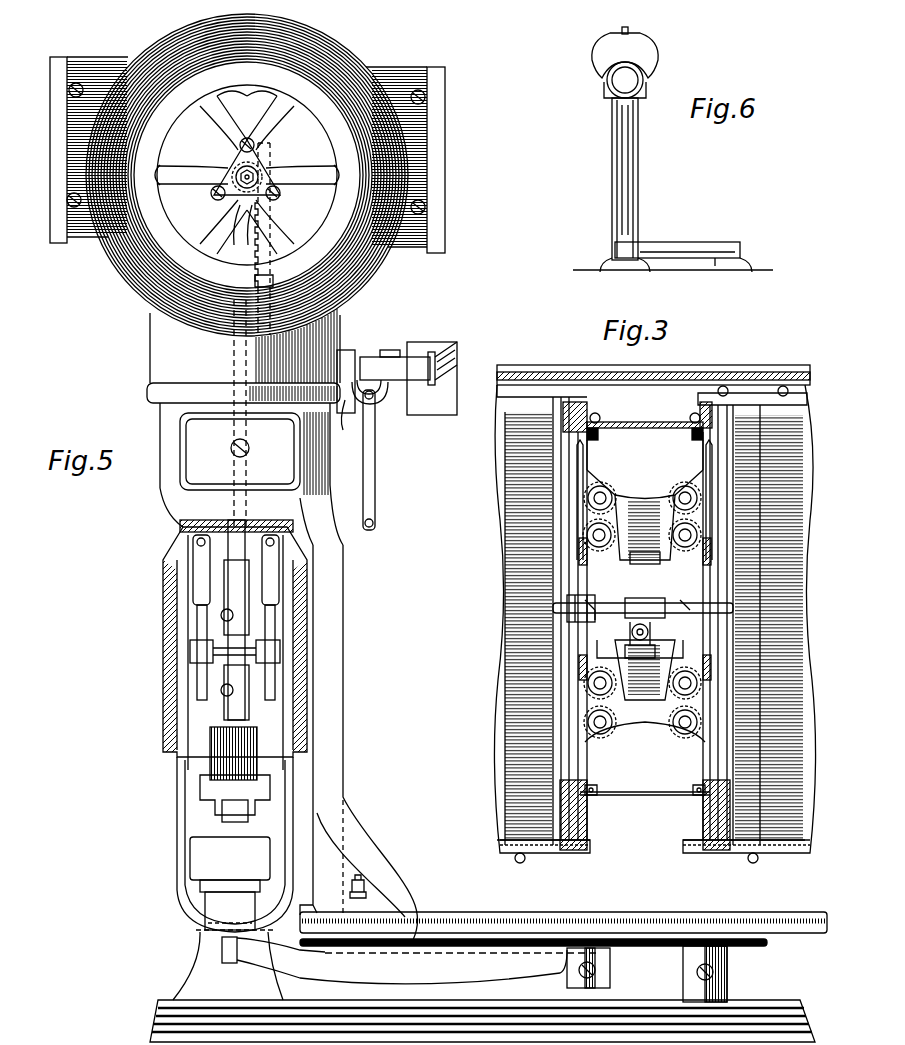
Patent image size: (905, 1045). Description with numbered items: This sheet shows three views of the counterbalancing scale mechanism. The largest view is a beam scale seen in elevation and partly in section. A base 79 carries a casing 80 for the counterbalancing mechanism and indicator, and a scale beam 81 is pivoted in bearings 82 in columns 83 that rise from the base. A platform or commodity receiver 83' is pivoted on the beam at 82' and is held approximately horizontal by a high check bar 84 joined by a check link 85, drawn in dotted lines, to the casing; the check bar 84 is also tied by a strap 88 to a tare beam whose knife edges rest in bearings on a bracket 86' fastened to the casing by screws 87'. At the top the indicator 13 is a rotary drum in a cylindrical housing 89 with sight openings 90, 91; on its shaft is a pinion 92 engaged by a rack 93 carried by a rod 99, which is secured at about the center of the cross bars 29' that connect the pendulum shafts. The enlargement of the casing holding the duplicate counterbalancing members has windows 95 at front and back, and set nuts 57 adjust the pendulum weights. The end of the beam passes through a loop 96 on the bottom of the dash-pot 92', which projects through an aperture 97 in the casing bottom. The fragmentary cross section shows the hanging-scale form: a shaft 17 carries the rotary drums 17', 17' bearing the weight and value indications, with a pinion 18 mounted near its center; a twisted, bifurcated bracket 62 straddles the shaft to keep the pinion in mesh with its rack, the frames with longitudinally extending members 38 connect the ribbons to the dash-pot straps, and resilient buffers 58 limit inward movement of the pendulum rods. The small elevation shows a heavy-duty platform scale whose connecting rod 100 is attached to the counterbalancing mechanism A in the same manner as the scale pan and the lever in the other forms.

In FIG. 5, the cylindrical housing 89 is at (344, 46).
In FIG. 5, the indicator 13 is at (165, 236).
In FIG. 5, the pinion 92 is at (241, 209).
In FIG. 5, the rack 93 is at (270, 250).
In FIG. 5, the sight opening 91 is at (62, 58).
In FIG. 5, the sight opening 90 is at (446, 130).
In FIG. 5, the check link 85 is at (148, 405).
In FIG. 5, the set nuts 57 is at (440, 345).
In FIG. 5, the bracket 86' is at (362, 417).
In FIG. 5, the screws 87' is at (348, 438).
In FIG. 5, the strap 88 is at (376, 480).
In FIG. 5, the check bar 84 is at (345, 603).
In FIG. 5, the windows 95 is at (165, 667).
In FIG. 5, the rod 99 is at (235, 541).
In FIG. 5, the cross bars 29' is at (251, 617).
In FIG. 5, the casing 80 is at (178, 840).
In FIG. 5, the dash-pot 92' is at (189, 883).
In FIG. 5, the aperture 97 is at (196, 932).
In FIG. 5, the loop 96 is at (222, 955).
In FIG. 5, the base 79 is at (160, 1027).
In FIG. 5, the scale beam 81 is at (314, 967).
In FIG. 5, the pivot 82' is at (615, 977).
In FIG. 5, the platform 83' is at (563, 908).
In FIG. 5, the bearings 82 is at (549, 962).
In FIG. 5, the columns 83 is at (733, 980).
In FIG. 3, the drums 17' is at (652, 614).
In FIG. 3, the shaft 17 is at (737, 624).
In FIG. 3, the longitudinally extending members 38 is at (600, 570).
In FIG. 3, the pinion 18 is at (628, 582).
In FIG. 3, the bracket 62 is at (560, 602).
In FIG. 3, the resilient buffers 58 is at (652, 637).
In FIG. 6, the counterbalancing mechanism A is at (655, 55).
In FIG. 6, the connecting rod 100 is at (614, 137).